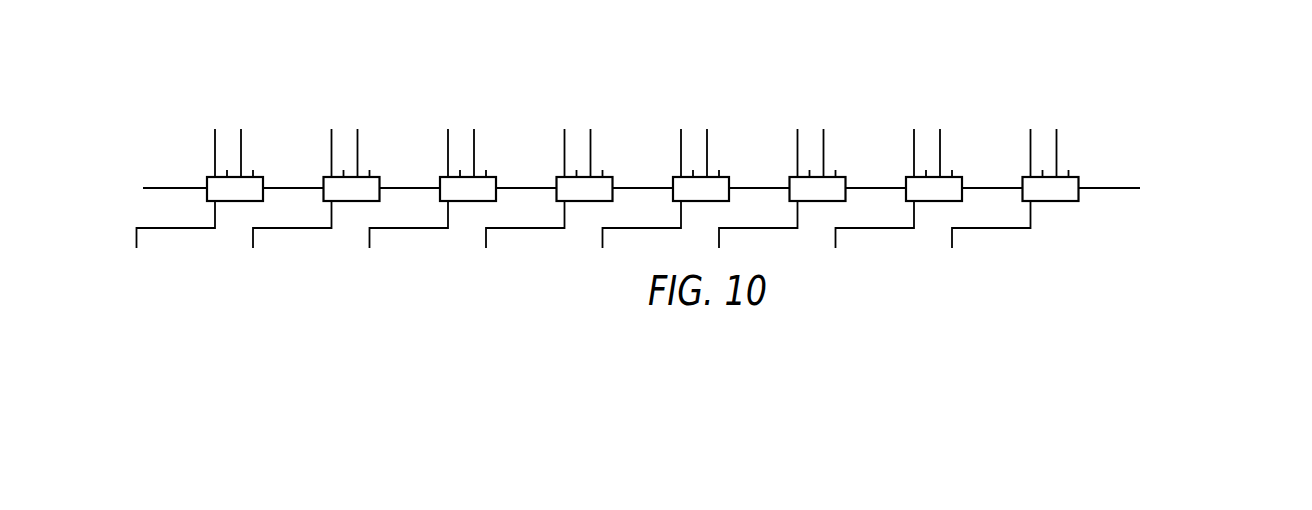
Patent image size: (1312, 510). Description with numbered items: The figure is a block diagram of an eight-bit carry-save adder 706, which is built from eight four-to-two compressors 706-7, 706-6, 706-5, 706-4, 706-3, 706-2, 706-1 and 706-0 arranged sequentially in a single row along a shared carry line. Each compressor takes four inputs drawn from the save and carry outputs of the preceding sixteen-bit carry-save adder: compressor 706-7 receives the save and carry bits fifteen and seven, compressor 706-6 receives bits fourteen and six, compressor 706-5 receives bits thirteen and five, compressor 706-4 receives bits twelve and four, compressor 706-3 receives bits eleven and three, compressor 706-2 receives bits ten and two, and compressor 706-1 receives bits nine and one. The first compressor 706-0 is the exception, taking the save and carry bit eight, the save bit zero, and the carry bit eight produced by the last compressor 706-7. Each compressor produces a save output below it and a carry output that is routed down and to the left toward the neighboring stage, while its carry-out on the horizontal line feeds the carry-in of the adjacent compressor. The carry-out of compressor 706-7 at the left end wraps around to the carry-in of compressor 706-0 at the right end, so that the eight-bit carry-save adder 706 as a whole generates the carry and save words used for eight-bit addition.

The 8-bit carry-save adder 706 is at (1197, 158).
The 4:2 compressor 706-7 is at (217, 166).
The 4:2 compressor 706-6 is at (333, 166).
The 4:2 compressor 706-5 is at (450, 166).
The 4:2 compressor 706-4 is at (566, 166).
The 4:2 compressor 706-3 is at (683, 166).
The 4:2 compressor 706-2 is at (799, 166).
The 4:2 compressor 706-1 is at (916, 171).
The 4:2 compressor 706-0 is at (1032, 171).